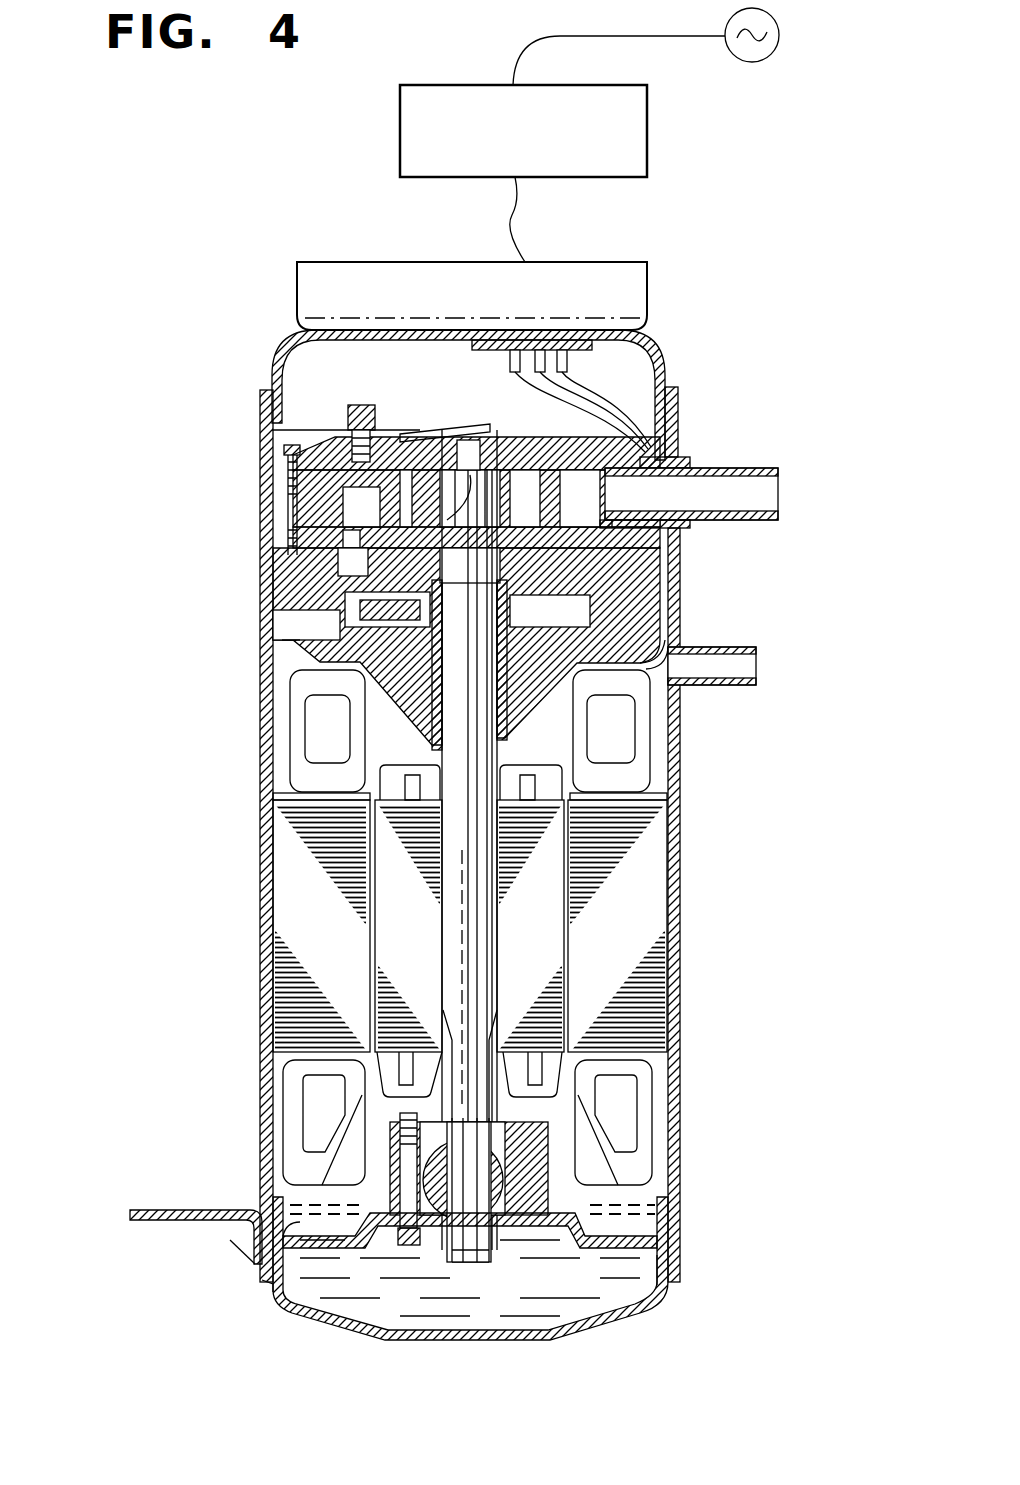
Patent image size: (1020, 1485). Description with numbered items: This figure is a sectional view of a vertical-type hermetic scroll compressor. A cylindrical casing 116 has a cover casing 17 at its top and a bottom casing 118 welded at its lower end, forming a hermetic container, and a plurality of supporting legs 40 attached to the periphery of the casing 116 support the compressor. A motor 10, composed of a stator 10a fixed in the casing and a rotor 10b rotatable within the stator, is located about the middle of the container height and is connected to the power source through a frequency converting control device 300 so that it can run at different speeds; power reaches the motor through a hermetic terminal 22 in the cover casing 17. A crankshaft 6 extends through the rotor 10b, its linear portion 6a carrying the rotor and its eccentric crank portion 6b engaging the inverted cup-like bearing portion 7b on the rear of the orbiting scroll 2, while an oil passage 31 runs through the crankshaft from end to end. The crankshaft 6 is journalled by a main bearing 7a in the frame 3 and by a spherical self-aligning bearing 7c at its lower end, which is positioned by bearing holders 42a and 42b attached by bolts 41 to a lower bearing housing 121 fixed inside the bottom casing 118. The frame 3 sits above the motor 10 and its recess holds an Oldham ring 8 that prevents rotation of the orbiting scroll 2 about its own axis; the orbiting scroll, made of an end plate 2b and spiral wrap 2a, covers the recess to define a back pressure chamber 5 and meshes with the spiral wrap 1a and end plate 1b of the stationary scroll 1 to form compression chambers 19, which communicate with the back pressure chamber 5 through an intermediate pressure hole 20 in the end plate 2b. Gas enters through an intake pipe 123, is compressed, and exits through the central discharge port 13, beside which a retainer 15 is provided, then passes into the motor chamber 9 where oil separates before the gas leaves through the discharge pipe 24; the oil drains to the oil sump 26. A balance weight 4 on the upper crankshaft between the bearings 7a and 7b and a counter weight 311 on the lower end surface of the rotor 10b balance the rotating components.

The frequency converting control device 300 is at (400, 150).
The hermetic terminal 22 is at (535, 330).
The retainer 15 is at (437, 332).
The cover casing 17 is at (275, 350).
The stationary scroll 1 is at (745, 322).
The spiral wrap 1a is at (545, 500).
The end plate 1b is at (560, 470).
The orbiting scroll 2 is at (185, 442).
The spiral wrap 2a is at (330, 515).
The end plate 2b is at (330, 480).
The compression chambers 19 is at (418, 480).
The discharge port 13 is at (463, 440).
The intermediate pressure hole 20 is at (548, 412).
The intake pipe 123 is at (742, 470).
The frame 3 is at (645, 582).
The balance weight 4 is at (372, 606).
The back pressure chamber 5 is at (570, 603).
The Oldham ring 8 is at (345, 565).
The crank portion 6b is at (345, 648).
The bearing portion 7b is at (670, 553).
The discharge pipe 24 is at (740, 663).
The main bearing 7a is at (555, 722).
The motor chamber 9 is at (555, 733).
The motor 10 is at (190, 845).
The stator 10a is at (307, 948).
The rotor 10b is at (397, 918).
The crankshaft 6 is at (500, 972).
The linear portion 6a is at (497, 918).
The casing 116 is at (262, 1042).
The counter weight 311 is at (580, 1100).
The bearing holder 42a is at (545, 1132).
The supporting legs 40 is at (172, 1210).
The self-aligning bearing 7c is at (545, 1172).
The bearing holder 42b is at (645, 1228).
The bottom casing 118 is at (272, 1295).
The bolts 41 is at (411, 1250).
The oil passage 31 is at (470, 1262).
The oil sump 26 is at (525, 1305).
The lower bearing housing 121 is at (660, 1290).